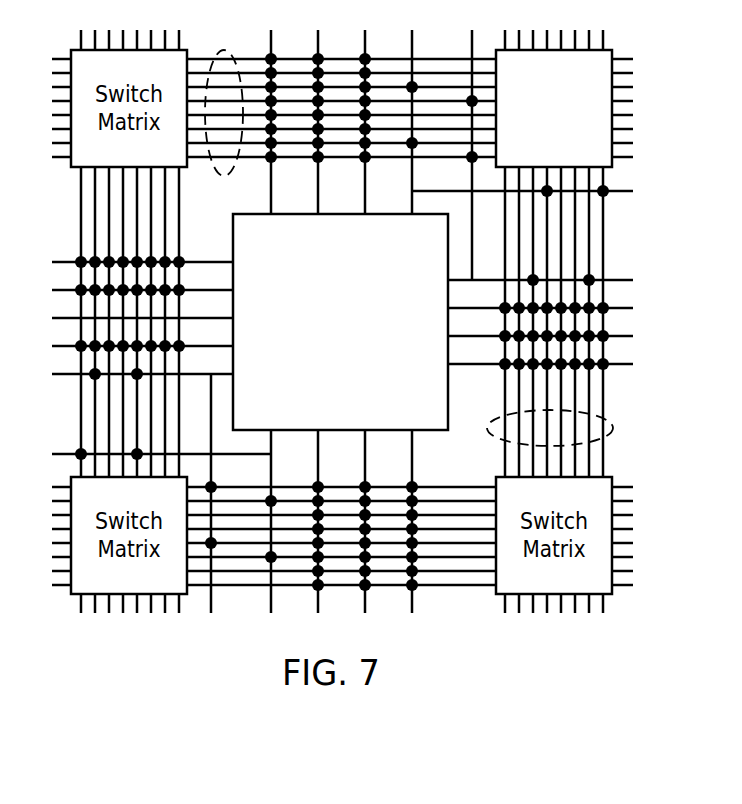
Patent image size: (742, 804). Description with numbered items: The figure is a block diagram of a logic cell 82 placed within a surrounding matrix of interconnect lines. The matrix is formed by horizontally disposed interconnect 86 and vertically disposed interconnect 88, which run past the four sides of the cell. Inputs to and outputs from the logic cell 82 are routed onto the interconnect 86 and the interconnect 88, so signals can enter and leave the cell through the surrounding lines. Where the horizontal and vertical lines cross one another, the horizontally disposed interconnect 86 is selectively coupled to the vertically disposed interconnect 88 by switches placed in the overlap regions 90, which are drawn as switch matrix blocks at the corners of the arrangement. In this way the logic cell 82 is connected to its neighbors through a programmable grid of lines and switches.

The logic cell 82 is at (327, 333).
The horizontally disposed interconnect 86 is at (228, 42).
The vertically disposed interconnect 88 is at (622, 435).
The overlap region 90 is at (603, 58).